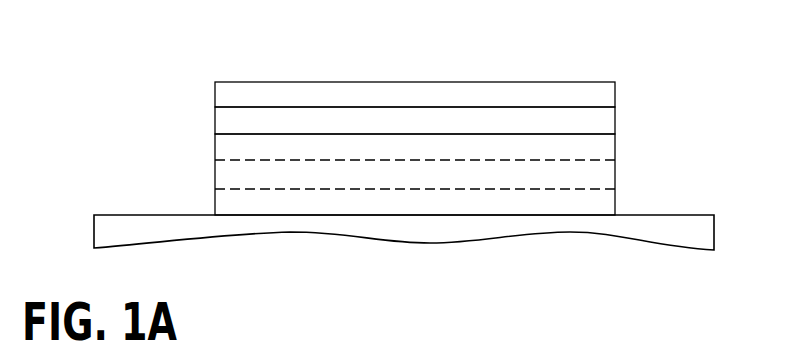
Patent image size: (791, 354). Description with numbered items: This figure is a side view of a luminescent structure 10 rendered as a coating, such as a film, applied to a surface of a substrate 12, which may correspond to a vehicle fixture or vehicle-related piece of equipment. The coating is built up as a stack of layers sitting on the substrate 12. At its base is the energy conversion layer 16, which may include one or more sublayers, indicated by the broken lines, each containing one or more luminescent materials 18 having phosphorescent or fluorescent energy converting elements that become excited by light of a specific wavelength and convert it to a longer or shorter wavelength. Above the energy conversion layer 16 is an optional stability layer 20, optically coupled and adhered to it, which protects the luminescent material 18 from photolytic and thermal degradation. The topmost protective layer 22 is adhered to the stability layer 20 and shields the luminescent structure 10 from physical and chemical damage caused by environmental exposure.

The luminescent structure 10 is at (553, 55).
The substrate 12 is at (657, 215).
The energy conversion layer 16 is at (215, 172).
The luminescent material 18 is at (570, 177).
The stability layer 20 is at (215, 121).
The protective layer 22 is at (302, 81).